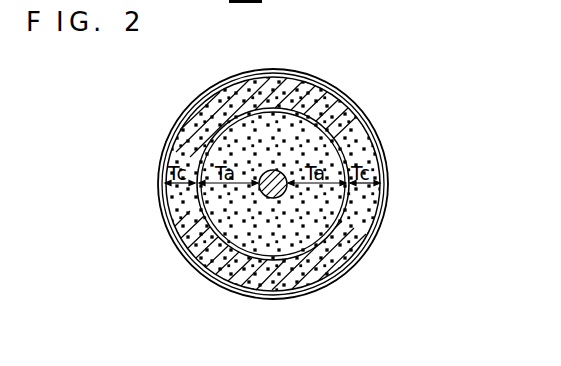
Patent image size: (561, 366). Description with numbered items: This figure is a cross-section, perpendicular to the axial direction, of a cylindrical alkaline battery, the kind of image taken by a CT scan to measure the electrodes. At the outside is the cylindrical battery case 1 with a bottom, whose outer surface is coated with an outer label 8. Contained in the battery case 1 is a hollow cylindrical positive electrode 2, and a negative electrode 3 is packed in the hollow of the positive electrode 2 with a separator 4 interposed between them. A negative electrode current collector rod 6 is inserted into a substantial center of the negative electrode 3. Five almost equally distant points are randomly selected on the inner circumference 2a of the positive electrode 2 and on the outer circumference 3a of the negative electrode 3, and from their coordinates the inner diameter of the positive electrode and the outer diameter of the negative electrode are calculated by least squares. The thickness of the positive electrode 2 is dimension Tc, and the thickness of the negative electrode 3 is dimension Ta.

The battery case 1 is at (312, 285).
The positive electrode 2 is at (372, 233).
The inner circumference of the positive electrode 2a is at (357, 118).
The negative electrode 3 is at (220, 207).
The outer circumference of the negative electrode 3a is at (218, 92).
The separator 4 is at (215, 275).
The negative electrode current collector rod 6 is at (275, 197).
The outer label 8 is at (357, 258).